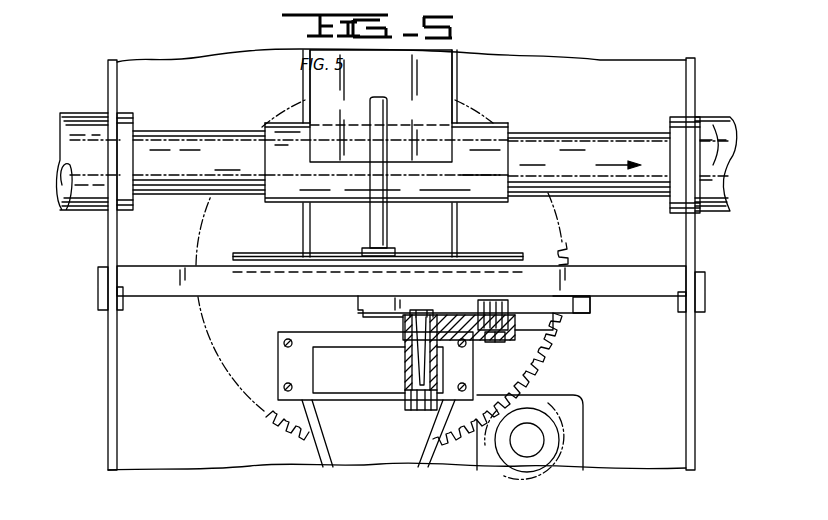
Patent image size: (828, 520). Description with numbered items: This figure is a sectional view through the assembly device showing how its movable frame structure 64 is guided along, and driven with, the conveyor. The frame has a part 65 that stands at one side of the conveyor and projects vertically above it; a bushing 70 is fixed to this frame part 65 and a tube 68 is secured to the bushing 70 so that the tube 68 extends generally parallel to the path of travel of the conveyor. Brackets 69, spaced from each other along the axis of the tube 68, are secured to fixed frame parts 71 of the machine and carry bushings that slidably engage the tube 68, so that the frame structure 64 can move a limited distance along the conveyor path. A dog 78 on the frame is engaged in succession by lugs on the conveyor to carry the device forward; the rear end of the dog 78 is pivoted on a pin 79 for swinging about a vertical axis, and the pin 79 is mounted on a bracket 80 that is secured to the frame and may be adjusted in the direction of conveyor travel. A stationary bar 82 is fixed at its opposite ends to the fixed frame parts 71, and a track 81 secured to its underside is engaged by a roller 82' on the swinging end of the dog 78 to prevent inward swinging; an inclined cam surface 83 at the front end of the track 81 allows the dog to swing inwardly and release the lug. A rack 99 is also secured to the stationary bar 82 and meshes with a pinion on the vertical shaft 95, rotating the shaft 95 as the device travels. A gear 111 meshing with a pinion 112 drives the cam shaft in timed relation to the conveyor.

The frame structure 64 is at (471, 95).
The part 65 is at (457, 244).
The tube 68 is at (250, 172).
The brackets 69 is at (98, 190).
The bushing 70 is at (492, 125).
The fixed frame parts 71 is at (110, 418).
The dog 78 is at (477, 342).
The pin 79 is at (423, 360).
The bracket 80 is at (403, 405).
The track 81 is at (565, 308).
The bar 82 is at (510, 311).
The roller 82' is at (359, 272).
The cam surface 83 is at (591, 309).
The vertical shaft 95 is at (385, 243).
The rack 99 is at (510, 259).
The gear 111 is at (277, 417).
The pinion 112 is at (533, 396).